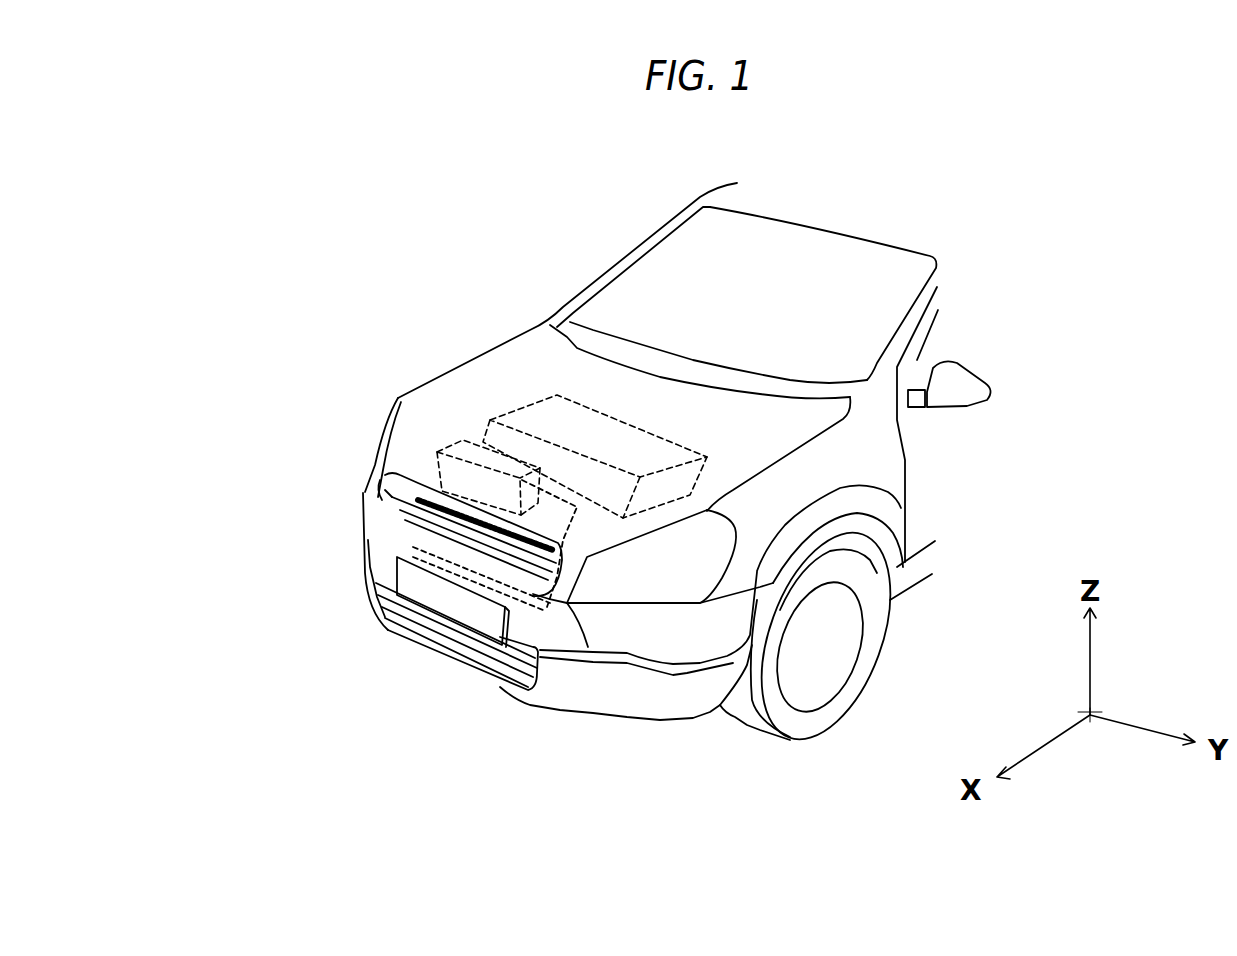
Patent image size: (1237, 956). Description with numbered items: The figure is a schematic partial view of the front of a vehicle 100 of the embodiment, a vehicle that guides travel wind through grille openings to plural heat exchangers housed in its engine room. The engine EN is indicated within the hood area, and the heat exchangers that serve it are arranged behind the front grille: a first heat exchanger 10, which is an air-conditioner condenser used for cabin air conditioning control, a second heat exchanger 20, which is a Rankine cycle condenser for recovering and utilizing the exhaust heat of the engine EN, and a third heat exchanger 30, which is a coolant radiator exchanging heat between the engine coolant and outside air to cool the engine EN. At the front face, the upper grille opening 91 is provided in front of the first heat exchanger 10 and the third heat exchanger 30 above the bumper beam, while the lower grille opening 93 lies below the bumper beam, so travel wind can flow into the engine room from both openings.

The vehicle 100 is at (275, 173).
The first heat exchanger 10 is at (433, 477).
The second heat exchanger 20 is at (588, 650).
The third heat exchanger 30 is at (465, 440).
The upper grille opening 91 is at (367, 493).
The lower grille opening 93 is at (425, 640).
The engine EN is at (560, 420).